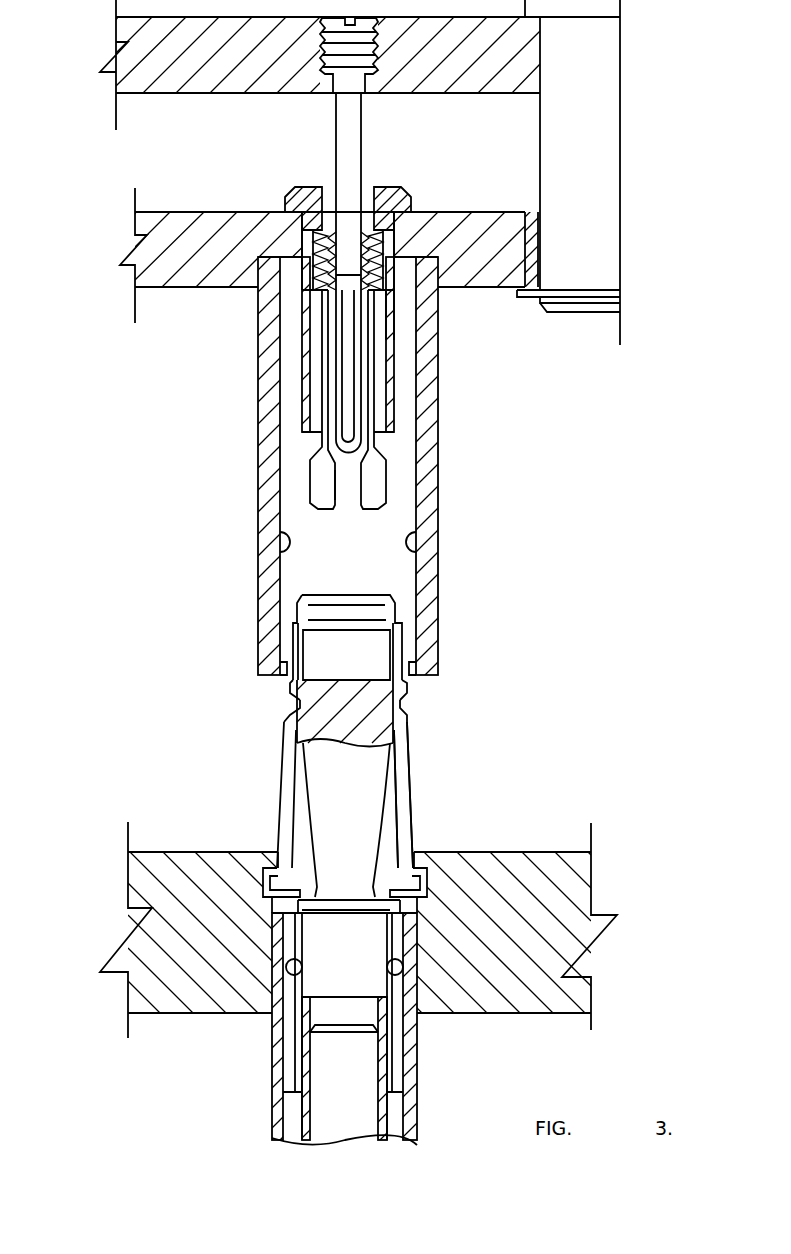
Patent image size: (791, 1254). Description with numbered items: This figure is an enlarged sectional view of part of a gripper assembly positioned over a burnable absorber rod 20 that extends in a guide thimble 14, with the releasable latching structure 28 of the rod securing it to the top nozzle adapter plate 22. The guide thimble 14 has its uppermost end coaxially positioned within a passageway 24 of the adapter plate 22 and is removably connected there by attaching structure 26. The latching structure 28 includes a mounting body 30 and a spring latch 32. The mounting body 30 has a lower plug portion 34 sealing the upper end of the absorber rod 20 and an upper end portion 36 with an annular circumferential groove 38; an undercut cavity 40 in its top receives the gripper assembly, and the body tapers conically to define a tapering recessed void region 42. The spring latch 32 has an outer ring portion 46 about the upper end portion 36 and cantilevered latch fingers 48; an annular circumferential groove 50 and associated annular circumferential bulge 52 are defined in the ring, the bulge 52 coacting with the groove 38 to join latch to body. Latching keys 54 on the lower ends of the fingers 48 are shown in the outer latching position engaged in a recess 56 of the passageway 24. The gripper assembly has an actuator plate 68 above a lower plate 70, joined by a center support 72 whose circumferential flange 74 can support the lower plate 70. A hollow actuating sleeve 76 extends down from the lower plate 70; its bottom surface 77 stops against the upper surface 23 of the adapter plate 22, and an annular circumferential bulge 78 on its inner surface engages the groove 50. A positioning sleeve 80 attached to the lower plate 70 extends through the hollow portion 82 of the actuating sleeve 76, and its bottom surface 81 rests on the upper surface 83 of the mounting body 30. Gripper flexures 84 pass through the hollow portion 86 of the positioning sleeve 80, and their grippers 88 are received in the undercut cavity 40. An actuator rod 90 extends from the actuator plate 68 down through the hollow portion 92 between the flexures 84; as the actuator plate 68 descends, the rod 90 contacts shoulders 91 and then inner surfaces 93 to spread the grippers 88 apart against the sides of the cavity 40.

The guide thimble 14 is at (275, 1122).
The burnable absorber rod 20 is at (333, 1100).
The adapter plate 22 is at (565, 880).
The upper surface of adapter plate 23 is at (172, 848).
The passageway 24 is at (285, 900).
The attaching structure 26 is at (435, 1075).
The releasable latching structure 28 is at (403, 753).
The mounting body 30 is at (327, 773).
The spring latch 32 is at (407, 687).
The lower plug portion 34 is at (290, 978).
The upper end portion 36 is at (400, 622).
The annular circumferential groove 38 is at (288, 707).
The undercut cavity 40 is at (372, 662).
The tapering recessed void region 42 is at (302, 825).
The outer ring portion 46 is at (290, 688).
The latch finger 48 is at (403, 840).
The annular circumferential groove 50 is at (407, 710).
The annular circumferential bulge 52 is at (407, 737).
The latching key 54 is at (430, 887).
The recess 56 is at (263, 890).
The actuator plate 68 is at (140, 75).
The lower plate 70 is at (153, 252).
The center support 72 is at (580, 120).
The circumferential flange 74 is at (575, 290).
The actuating sleeve 76 is at (423, 497).
The bottom surface of actuating sleeve 77 is at (268, 668).
The annular circumferential bulge 78 is at (278, 545).
The positioning sleeve 80 is at (310, 400).
The bottom surface of positioning sleeve 81 is at (322, 437).
The hollow portion of actuating sleeve 82 is at (298, 360).
The upper surface of mounting body 83 is at (373, 597).
The gripper flexure 84 is at (372, 352).
The hollow portion of positioning sleeve 86 is at (383, 318).
The gripper 88 is at (322, 497).
The actuator rod 90 is at (347, 128).
The shoulder 91 is at (380, 463).
The hollow portion between gripper flexures 92 is at (362, 382).
The inner surface of gripper 93 is at (360, 485).